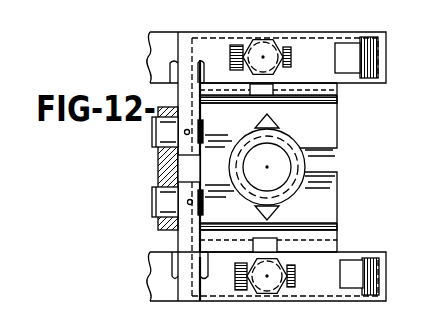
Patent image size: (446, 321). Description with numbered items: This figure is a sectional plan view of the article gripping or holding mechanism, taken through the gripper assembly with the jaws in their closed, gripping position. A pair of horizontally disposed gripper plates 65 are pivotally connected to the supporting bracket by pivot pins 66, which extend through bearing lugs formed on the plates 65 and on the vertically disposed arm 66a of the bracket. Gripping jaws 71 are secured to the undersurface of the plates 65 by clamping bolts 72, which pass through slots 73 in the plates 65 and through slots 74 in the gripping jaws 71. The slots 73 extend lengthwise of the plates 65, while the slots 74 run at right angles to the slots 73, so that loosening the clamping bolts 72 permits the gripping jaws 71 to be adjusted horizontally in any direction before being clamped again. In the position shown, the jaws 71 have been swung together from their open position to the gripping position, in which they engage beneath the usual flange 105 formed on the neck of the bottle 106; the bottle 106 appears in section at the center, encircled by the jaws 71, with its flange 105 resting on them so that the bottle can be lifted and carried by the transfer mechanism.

The gripper plate 65 is at (152, 47).
The pivot pin 66 is at (160, 134).
The vertically disposed arm 66a is at (160, 170).
The gripping jaw 71 is at (338, 122).
The clamping bolt 72 is at (271, 43).
The slot 73 is at (348, 52).
The slot 74 is at (338, 96).
The flange 105 is at (302, 141).
The bottle 106 is at (298, 167).